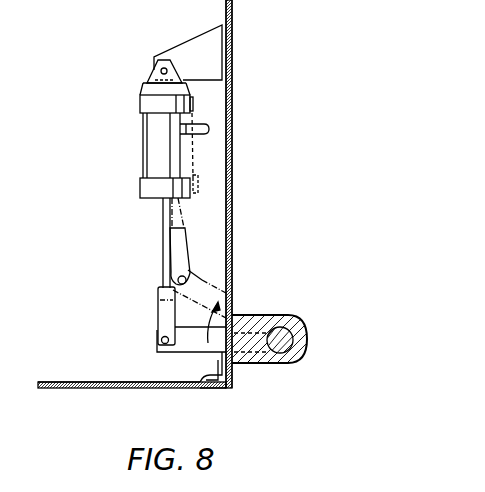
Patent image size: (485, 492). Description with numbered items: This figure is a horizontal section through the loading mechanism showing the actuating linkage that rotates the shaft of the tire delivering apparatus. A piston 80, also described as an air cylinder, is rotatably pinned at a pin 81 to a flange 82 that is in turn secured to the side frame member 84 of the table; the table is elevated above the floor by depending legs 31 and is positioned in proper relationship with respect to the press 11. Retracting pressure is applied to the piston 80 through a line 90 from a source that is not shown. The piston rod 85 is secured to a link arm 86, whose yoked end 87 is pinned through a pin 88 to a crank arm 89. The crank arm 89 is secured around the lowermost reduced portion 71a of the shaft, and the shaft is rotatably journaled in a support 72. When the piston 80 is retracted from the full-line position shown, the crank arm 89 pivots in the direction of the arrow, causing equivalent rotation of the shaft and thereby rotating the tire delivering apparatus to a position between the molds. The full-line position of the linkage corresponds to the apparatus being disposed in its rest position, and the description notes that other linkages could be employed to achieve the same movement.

The flange 82 is at (197, 43).
The pin 81 is at (157, 73).
The side frame member 84 is at (232, 93).
The line 90 is at (200, 124).
The piston 80 is at (148, 146).
The piston rod 85 is at (161, 205).
The link arm 86 is at (158, 297).
The yoked end 87 is at (157, 323).
The pin 88 is at (161, 341).
The crank arm 89 is at (206, 346).
The support 72 is at (285, 315).
The lowermost reduced portion 71a is at (305, 343).
The leg 31 is at (208, 389).
The press 11 is at (137, 305).